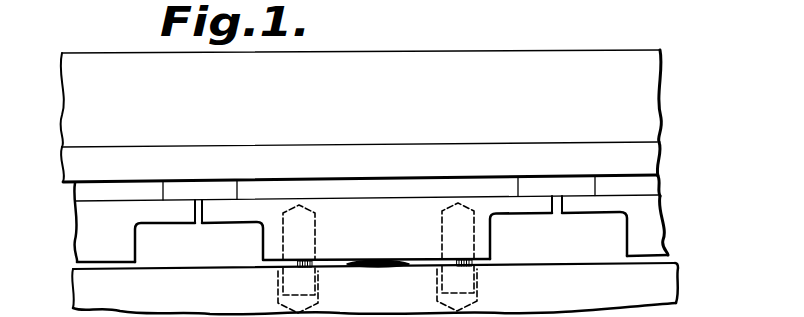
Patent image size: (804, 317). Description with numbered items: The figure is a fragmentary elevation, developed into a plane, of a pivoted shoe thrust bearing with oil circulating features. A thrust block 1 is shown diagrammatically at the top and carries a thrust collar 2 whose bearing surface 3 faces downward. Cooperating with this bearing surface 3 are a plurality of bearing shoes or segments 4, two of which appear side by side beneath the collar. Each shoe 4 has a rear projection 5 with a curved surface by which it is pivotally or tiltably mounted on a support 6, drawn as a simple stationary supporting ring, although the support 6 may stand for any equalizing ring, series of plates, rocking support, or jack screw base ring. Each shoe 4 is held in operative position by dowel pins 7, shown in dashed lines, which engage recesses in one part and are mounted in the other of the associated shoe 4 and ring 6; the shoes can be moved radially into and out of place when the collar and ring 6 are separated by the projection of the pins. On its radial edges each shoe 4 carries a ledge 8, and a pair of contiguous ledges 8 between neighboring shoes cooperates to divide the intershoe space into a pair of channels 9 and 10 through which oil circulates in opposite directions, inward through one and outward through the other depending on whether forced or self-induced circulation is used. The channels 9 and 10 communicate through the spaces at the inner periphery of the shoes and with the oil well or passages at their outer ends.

The thrust block 1 is at (648, 113).
The thrust collar 2 is at (645, 159).
The bearing surface 3 is at (215, 178).
The bearing shoe 4 is at (97, 231).
The rear projection 5 is at (378, 261).
The support 6 is at (655, 281).
The dowel pin 7 is at (284, 244).
The ledge 8 is at (215, 210).
The channel 9 is at (186, 191).
The channel 10 is at (168, 252).